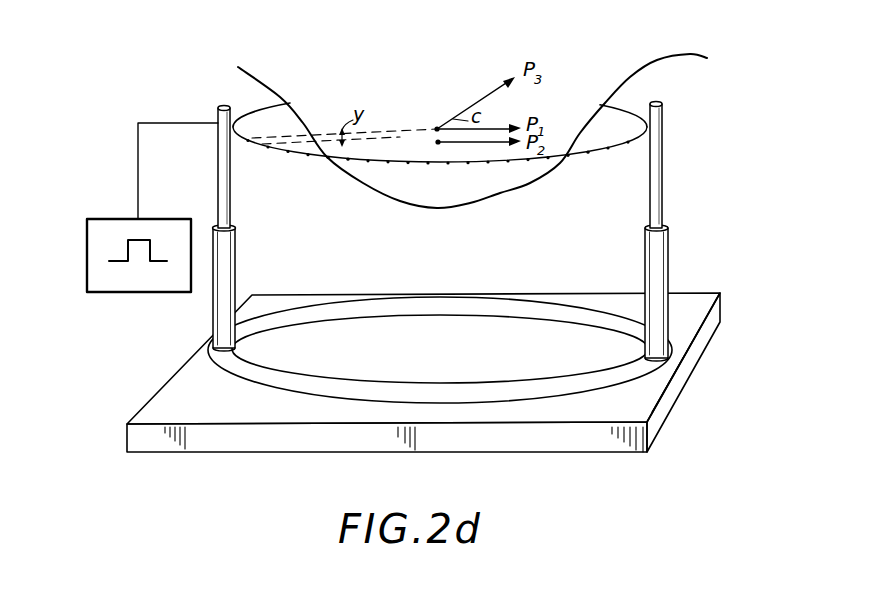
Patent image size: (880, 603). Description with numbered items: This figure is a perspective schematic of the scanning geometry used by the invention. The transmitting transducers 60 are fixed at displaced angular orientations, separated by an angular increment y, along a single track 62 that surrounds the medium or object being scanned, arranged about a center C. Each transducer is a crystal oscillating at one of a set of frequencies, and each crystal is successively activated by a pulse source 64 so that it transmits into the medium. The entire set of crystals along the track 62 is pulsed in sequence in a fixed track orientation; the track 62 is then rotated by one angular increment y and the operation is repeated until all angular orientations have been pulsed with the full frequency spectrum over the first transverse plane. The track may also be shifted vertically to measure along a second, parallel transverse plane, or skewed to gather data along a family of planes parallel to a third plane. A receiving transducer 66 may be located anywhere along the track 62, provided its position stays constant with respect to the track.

The transmitting transducers 60 is at (248, 140).
The track 62 is at (218, 107).
The pulse source 64 is at (88, 271).
The receiving transducer 66 is at (267, 103).